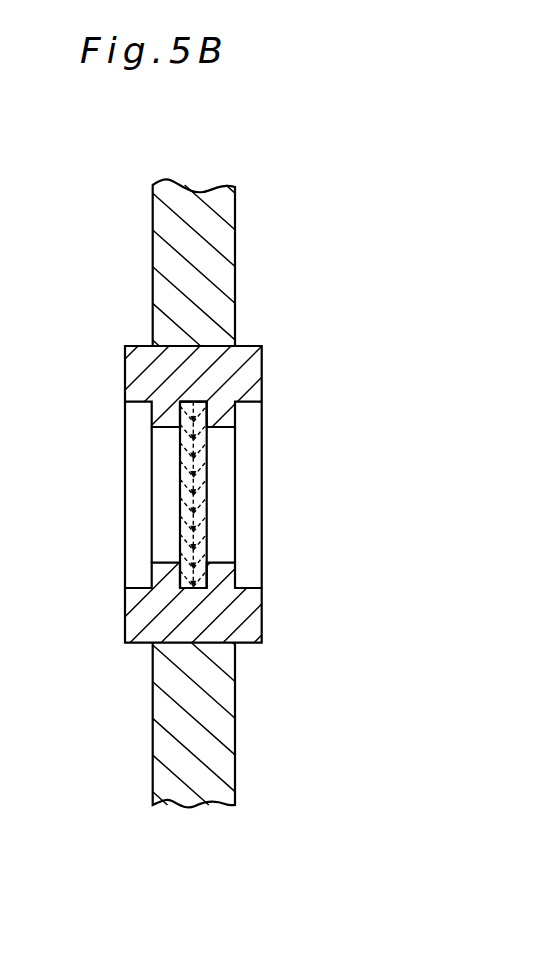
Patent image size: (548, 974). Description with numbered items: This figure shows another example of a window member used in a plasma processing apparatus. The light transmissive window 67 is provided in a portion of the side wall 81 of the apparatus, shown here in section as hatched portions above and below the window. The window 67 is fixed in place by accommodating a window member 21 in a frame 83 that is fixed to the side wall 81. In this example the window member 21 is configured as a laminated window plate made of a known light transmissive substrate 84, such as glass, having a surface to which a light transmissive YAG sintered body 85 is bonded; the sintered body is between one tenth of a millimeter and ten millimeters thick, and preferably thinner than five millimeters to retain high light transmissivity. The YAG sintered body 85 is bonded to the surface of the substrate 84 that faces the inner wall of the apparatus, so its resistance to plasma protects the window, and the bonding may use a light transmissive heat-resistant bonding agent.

The side wall 81 is at (225, 253).
The frame 83 is at (242, 367).
The light transmissive substrate 84 is at (180, 485).
The light transmissive YAG sintered body 85 is at (207, 490).
The window member 21 is at (180, 528).
The light transmissive window 67 is at (307, 543).